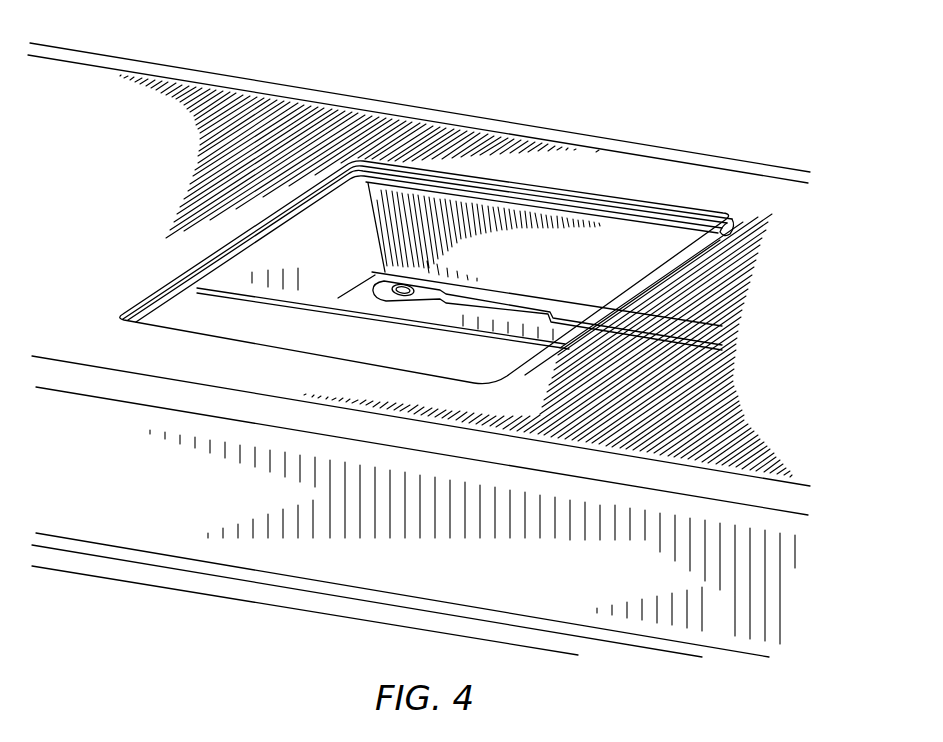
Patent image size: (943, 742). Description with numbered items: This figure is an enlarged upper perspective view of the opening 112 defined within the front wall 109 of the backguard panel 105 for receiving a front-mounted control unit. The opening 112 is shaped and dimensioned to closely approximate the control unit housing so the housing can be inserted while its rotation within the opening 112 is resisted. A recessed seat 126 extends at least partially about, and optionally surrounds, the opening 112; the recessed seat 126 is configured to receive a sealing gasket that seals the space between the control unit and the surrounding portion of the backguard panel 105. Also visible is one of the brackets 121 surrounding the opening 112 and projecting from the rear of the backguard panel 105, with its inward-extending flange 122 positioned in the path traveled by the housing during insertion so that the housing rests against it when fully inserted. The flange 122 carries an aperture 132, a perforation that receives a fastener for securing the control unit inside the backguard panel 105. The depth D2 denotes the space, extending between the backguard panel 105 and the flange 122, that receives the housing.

The backguard panel 105 is at (163, 187).
The front wall 109 is at (768, 346).
The opening 112 is at (318, 222).
The bracket 121 is at (642, 246).
The flange 122 is at (442, 285).
The recessed seat 126 is at (408, 160).
The aperture 132 is at (405, 280).
The depth D2 is at (363, 296).